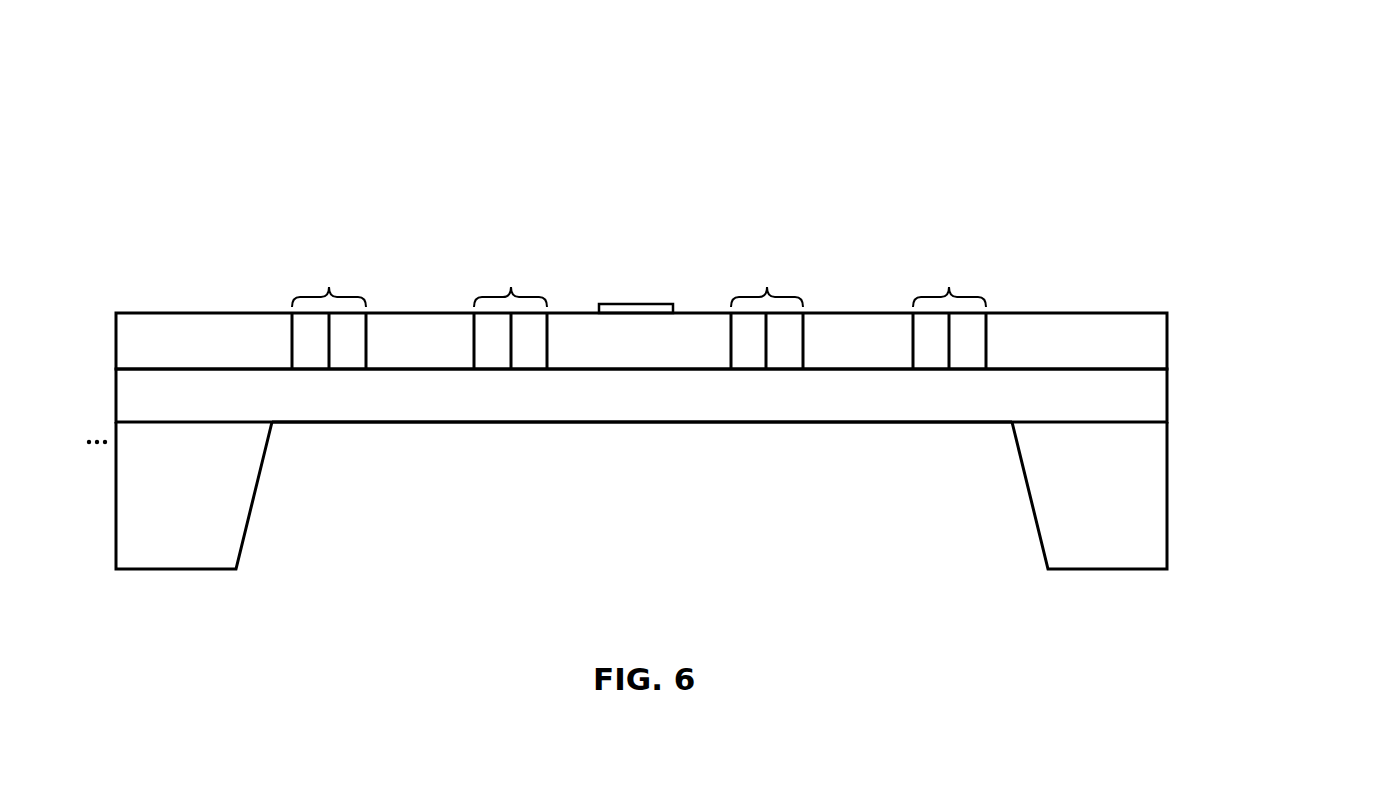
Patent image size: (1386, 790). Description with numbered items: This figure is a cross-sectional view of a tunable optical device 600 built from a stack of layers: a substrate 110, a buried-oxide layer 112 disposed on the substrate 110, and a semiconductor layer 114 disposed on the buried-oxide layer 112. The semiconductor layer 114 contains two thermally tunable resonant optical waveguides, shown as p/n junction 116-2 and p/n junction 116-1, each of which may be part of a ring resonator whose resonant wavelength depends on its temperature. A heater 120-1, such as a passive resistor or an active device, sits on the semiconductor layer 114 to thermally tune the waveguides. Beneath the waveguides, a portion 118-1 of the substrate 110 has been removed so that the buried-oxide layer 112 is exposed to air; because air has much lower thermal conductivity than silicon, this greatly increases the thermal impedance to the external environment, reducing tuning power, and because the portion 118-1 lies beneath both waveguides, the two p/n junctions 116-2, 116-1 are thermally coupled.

The tunable optical device 600 is at (1168, 122).
The semiconductor layer 114 is at (1112, 337).
The buried-oxide layer 112 is at (1125, 393).
The substrate 110 is at (225, 487).
The portion 118-1 is at (867, 478).
The heater 120-1 is at (634, 307).
The p/n junction 116-2 is at (511, 287).
The p/n junction 116-1 is at (949, 287).